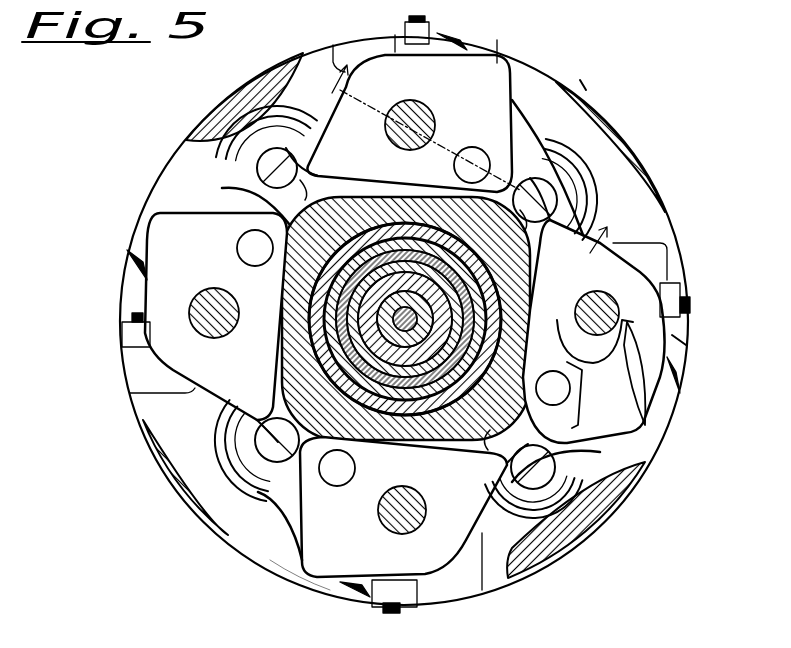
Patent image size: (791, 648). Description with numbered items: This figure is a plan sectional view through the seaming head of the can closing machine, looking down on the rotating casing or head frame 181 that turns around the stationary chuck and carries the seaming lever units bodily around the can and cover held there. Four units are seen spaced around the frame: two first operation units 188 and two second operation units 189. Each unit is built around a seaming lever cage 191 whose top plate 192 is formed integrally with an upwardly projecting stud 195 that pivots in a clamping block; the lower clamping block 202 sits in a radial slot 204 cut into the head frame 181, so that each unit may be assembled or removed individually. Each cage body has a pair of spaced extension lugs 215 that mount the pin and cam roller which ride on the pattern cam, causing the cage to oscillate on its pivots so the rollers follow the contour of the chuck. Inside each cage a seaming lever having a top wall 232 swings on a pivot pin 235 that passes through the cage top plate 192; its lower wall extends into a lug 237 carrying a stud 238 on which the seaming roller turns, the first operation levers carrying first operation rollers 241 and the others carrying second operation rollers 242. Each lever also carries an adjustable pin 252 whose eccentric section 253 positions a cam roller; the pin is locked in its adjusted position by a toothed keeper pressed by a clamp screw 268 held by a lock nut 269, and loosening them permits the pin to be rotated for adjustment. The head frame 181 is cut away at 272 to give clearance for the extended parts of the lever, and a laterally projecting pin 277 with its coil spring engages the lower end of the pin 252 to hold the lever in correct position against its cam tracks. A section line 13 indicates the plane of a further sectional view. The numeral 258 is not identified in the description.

The section line 13 is at (485, 145).
The head frame 181 is at (632, 165).
The first operation unit 188 is at (515, 58).
The second operation unit 189 is at (686, 345).
The seaming lever cage 191 is at (300, 560).
The top plate 192 is at (405, 316).
The stud 195 is at (392, 128).
The lower clamping block 202 is at (690, 262).
The slot 204 is at (682, 241).
The extension lug 215 is at (423, 315).
The top wall 232 is at (205, 200).
The pivot pin 235 is at (462, 168).
The lug 237 is at (230, 196).
The stud 238 is at (406, 318).
The first operation roller 241 is at (590, 200).
The second operation roller 242 is at (287, 126).
The pin 252 is at (595, 374).
The eccentric section 253 is at (406, 315).
The hub ring 258 is at (397, 336).
The clamp screw 268 is at (405, 27).
The lock nut 269 is at (430, 30).
The cut-away 272 is at (587, 87).
The pin 277 is at (470, 45).